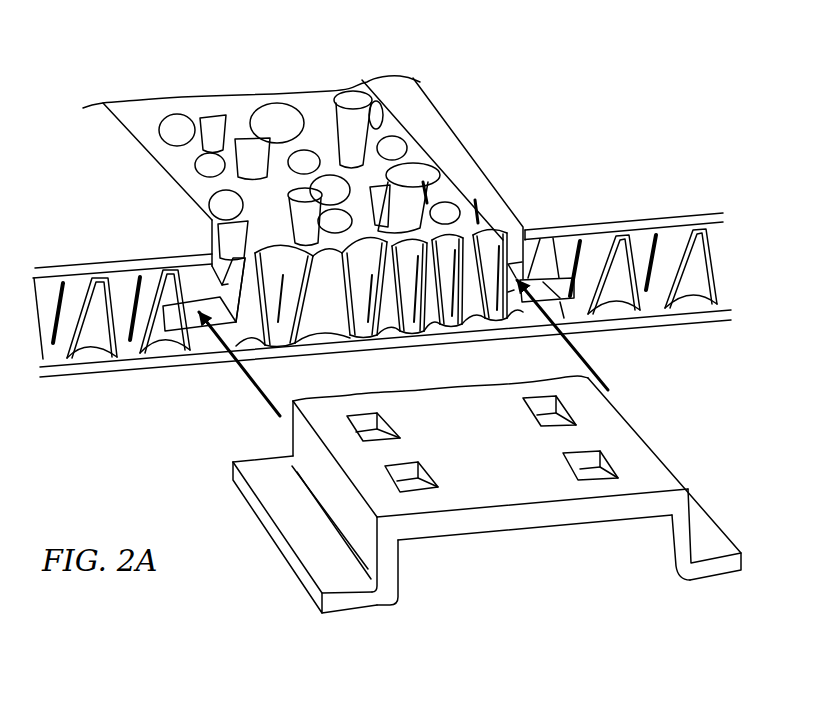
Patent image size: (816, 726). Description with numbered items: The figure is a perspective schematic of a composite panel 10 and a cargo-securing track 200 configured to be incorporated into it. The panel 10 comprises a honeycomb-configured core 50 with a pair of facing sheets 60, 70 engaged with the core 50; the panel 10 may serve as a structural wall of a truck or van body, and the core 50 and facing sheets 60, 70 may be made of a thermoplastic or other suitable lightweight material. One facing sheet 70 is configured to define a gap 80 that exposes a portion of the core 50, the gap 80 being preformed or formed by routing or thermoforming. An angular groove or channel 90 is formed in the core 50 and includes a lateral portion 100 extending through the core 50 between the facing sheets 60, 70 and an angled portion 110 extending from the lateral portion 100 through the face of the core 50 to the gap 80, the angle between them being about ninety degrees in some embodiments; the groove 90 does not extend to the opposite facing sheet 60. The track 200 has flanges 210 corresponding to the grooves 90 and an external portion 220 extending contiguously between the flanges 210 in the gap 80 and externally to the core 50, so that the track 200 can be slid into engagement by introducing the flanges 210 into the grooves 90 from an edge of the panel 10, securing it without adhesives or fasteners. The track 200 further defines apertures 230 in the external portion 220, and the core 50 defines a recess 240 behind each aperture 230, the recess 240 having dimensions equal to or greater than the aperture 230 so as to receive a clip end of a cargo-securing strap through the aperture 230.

The composite panel 10 is at (590, 117).
The core 50 is at (650, 283).
The facing sheet 60 is at (697, 321).
The facing sheet 70 is at (92, 267).
The gap 80 is at (302, 186).
The groove 90 is at (207, 297).
The lateral portion 100 is at (183, 330).
The angled portion 110 is at (228, 284).
The cargo-securing track 200 is at (500, 528).
The flanges 210 is at (388, 596).
The external portion 220 is at (538, 517).
The apertures 230 is at (592, 417).
The recess 240 is at (327, 120).